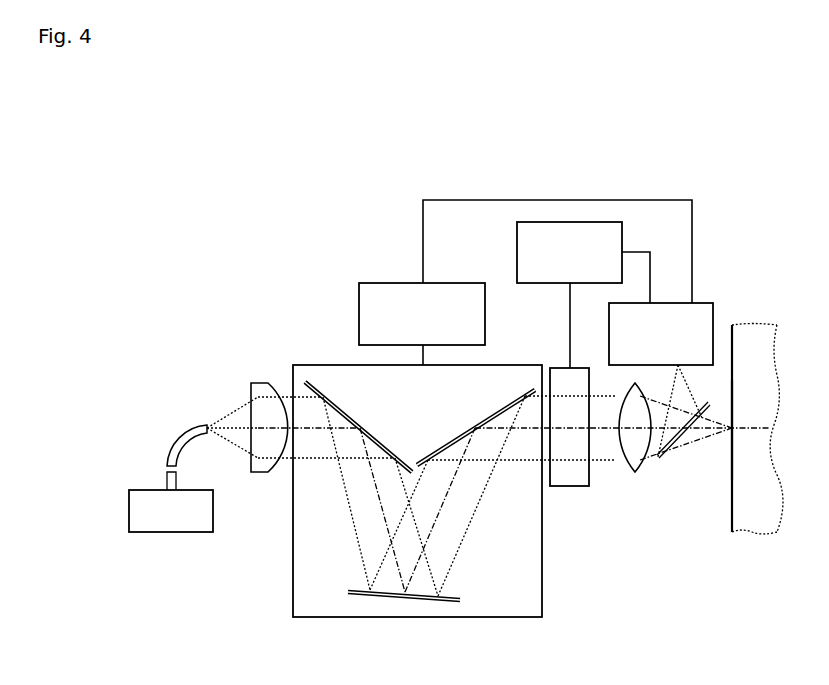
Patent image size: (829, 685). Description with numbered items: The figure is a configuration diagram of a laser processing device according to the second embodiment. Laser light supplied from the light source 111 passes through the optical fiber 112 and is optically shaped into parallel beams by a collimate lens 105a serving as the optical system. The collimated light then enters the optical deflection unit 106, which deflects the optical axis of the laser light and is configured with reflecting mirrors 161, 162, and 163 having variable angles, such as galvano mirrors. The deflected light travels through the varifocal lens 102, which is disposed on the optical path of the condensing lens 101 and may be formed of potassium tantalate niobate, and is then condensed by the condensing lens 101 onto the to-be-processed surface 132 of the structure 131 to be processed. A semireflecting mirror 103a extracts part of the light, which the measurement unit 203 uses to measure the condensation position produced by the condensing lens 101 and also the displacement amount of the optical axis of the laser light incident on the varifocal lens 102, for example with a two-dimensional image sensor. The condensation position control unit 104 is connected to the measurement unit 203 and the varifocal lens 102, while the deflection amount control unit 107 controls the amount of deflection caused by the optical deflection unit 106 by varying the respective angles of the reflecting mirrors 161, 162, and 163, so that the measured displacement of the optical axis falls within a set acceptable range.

The condensing lens 101 is at (635, 474).
The varifocal lens 102 is at (570, 488).
The semireflecting mirror 103a is at (658, 458).
The condensation position control unit 104 is at (517, 252).
The collimate lens 105a is at (258, 474).
The optical deflection unit 106 is at (525, 365).
The deflection amount control unit 107 is at (359, 316).
The light source 111 is at (143, 490).
The optical fiber 112 is at (180, 432).
The structure to be processed 131 is at (753, 534).
The to-be-processed surface 132 is at (732, 513).
The reflecting mirror 161 is at (338, 399).
The reflecting mirror 162 is at (462, 600).
The reflecting mirror 163 is at (483, 426).
The measurement unit 203 is at (713, 305).